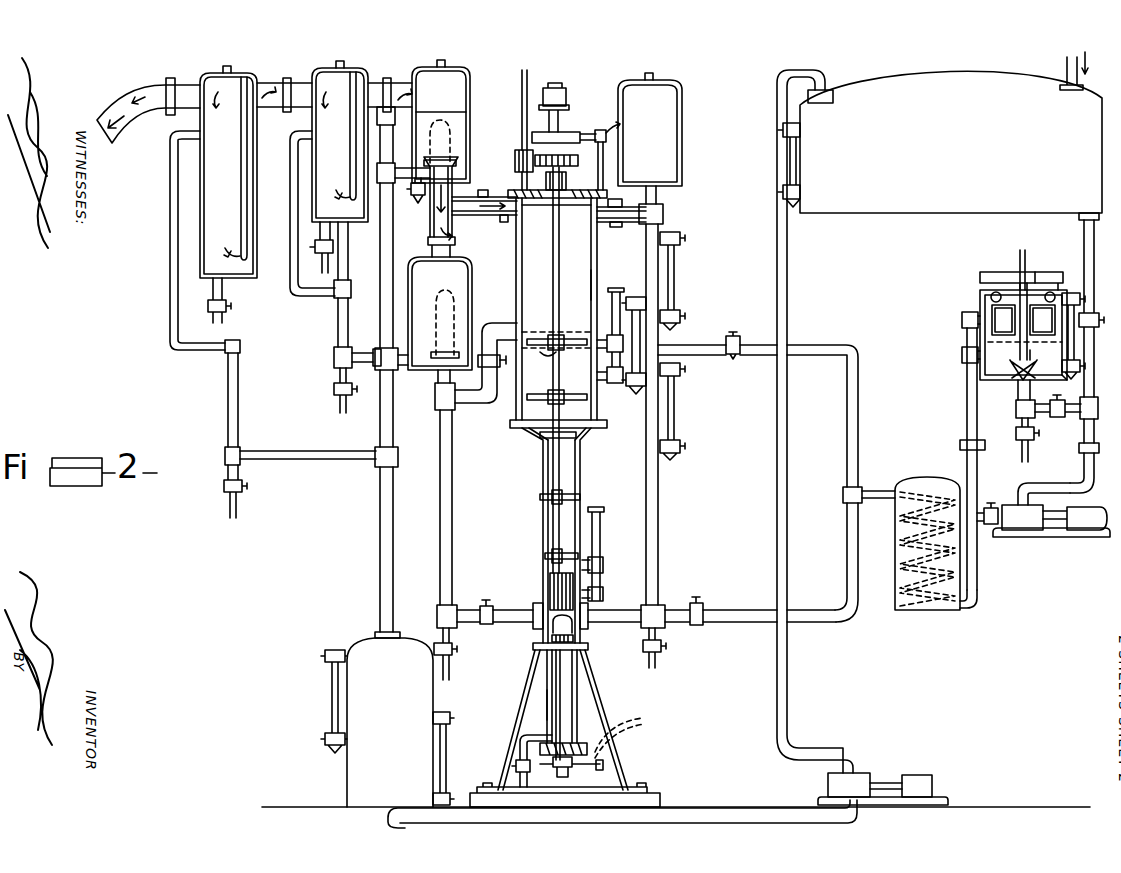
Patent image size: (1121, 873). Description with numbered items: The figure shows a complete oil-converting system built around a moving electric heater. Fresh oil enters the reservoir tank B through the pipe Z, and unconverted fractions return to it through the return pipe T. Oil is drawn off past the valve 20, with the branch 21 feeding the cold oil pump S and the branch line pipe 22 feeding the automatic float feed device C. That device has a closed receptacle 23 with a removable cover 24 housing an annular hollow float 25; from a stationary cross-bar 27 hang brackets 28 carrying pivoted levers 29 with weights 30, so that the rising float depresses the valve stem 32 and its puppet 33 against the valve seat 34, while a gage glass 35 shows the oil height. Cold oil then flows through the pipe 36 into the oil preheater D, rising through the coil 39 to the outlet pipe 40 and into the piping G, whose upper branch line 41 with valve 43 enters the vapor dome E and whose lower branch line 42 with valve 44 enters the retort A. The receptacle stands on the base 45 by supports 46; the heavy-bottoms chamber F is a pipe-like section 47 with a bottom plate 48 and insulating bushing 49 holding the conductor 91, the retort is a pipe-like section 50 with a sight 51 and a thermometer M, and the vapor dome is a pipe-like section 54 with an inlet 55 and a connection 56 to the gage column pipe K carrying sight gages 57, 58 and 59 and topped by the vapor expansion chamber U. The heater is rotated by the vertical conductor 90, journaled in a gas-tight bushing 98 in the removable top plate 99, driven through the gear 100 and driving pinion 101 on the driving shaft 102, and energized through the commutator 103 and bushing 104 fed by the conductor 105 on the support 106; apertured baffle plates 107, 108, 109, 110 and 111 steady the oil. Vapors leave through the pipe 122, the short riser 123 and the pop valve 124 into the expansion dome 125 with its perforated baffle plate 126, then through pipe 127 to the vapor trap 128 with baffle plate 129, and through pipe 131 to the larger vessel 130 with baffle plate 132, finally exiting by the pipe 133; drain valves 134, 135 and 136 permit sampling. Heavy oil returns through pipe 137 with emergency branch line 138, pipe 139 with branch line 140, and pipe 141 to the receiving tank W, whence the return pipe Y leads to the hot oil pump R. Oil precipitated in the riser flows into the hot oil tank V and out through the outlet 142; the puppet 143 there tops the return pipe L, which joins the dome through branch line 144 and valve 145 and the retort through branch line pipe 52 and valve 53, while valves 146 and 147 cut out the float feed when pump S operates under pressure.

The valve 20 is at (1099, 300).
The branch 21 is at (1090, 470).
The branch line pipe 22 is at (1034, 420).
The closed receptacle 23 is at (1012, 389).
The removable cover 24 is at (1036, 272).
The annular hollow float 25 is at (1025, 345).
The stationary cross-bar 27 is at (1056, 284).
The bracket 28 is at (1042, 320).
The lever 29 is at (1004, 320).
The weight 30 is at (990, 297).
The valve stem 32 is at (1012, 261).
The puppet 33 is at (1044, 361).
The valve seat 34 is at (1018, 380).
The gage glass 35 is at (1068, 380).
The pipe 36 is at (971, 422).
The continuously rising coil 39 is at (900, 548).
The outlet pipe 40 is at (880, 491).
The upper inlet or branch line 41 is at (710, 350).
The lower inlet or branch line 42 is at (760, 617).
The valve 43 is at (736, 360).
The valve 44 is at (697, 597).
The base 45 is at (650, 800).
The supports 46 is at (510, 752).
The pipe-like section 47 is at (549, 695).
The bottom plate 48 is at (593, 752).
The insulating bushing 49 is at (556, 766).
The pipe-like section 50 is at (578, 467).
The sight 51 is at (550, 583).
The branch line pipe 52 is at (513, 624).
The valve 53 is at (488, 602).
The pipe-like section 54 is at (591, 280).
The inlet 55 is at (548, 353).
The connection 56 is at (597, 215).
The sight gage 57 is at (675, 282).
The sight gage 58 is at (636, 394).
The sight gage 59 is at (675, 414).
The vertical conductor 90 is at (553, 262).
The conductor 91 is at (562, 690).
The gas-tight bushing 98 is at (566, 185).
The removable top plate 99 is at (508, 192).
The gear 100 is at (567, 151).
The driving pinion 101 is at (515, 160).
The driving shaft 102 is at (522, 88).
The commutator 103 is at (562, 125).
The bushing 104 is at (600, 120).
The conductor 105 is at (606, 128).
The support 106 is at (620, 170).
The apertured baffle plate 107 is at (545, 553).
The apertured baffle plate 108 is at (540, 497).
The apertured baffle plate 109 is at (540, 440).
The agitator 110 is at (578, 394).
The apertured baffle plate 111 is at (588, 339).
The pipe 122 is at (500, 216).
The short riser 123 is at (460, 170).
The pop valve 124 is at (442, 140).
The expansion and condensing dome 125 is at (466, 122).
The perforated baffle plate 126 is at (443, 112).
The pipe 127 is at (388, 78).
The vapor trap 128 is at (316, 150).
The perpendicular baffle plate 129 is at (351, 174).
The vessel 130 is at (255, 185).
The pipe 131 is at (286, 78).
The baffle plate 132 is at (241, 190).
The pipe 133 is at (150, 94).
The valve 134 is at (418, 203).
The valve 135 is at (310, 252).
The valve 136 is at (210, 301).
The pipe 137 is at (380, 268).
The emergency branch line 138 is at (392, 135).
The pipe 139 is at (340, 326).
The emergency branch line 140 is at (290, 218).
The pipe 141 is at (170, 244).
The outlet 142 is at (408, 368).
The puppet 143 is at (448, 324).
The branch line 144 is at (472, 404).
The valve 145 is at (505, 368).
The valve 146 is at (1058, 418).
The valve 147 is at (960, 445).
The retort and converting chamber A is at (577, 494).
The reservoir tank B is at (940, 142).
The automatic float feed device C is at (975, 307).
The oil preheater D is at (927, 556).
The vapor dome E is at (597, 258).
The chamber F is at (578, 700).
The piping G is at (862, 410).
The gage column pipe K is at (659, 521).
The return pipe L is at (450, 494).
The thermometer M is at (604, 519).
The hot oil pump R is at (883, 789).
The cold oil pump S is at (1051, 521).
The return pipe T is at (791, 412).
The vapor expansion chamber U is at (650, 129).
The hot oil tank V is at (440, 333).
The receiving tank W is at (387, 722).
The return pipe Y is at (388, 820).
The pipe Z is at (1067, 68).